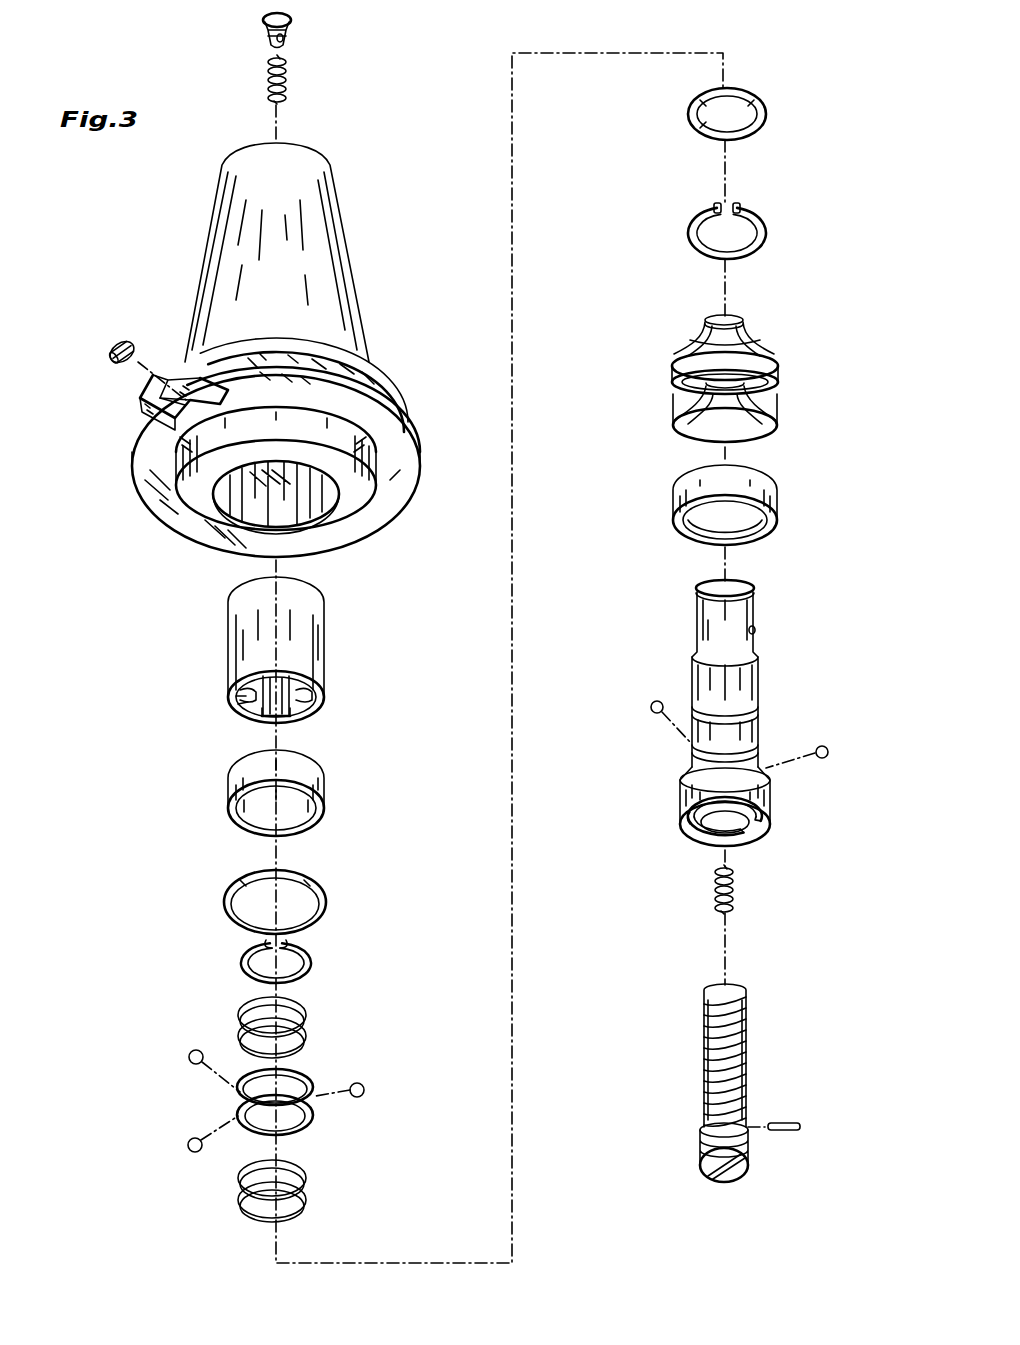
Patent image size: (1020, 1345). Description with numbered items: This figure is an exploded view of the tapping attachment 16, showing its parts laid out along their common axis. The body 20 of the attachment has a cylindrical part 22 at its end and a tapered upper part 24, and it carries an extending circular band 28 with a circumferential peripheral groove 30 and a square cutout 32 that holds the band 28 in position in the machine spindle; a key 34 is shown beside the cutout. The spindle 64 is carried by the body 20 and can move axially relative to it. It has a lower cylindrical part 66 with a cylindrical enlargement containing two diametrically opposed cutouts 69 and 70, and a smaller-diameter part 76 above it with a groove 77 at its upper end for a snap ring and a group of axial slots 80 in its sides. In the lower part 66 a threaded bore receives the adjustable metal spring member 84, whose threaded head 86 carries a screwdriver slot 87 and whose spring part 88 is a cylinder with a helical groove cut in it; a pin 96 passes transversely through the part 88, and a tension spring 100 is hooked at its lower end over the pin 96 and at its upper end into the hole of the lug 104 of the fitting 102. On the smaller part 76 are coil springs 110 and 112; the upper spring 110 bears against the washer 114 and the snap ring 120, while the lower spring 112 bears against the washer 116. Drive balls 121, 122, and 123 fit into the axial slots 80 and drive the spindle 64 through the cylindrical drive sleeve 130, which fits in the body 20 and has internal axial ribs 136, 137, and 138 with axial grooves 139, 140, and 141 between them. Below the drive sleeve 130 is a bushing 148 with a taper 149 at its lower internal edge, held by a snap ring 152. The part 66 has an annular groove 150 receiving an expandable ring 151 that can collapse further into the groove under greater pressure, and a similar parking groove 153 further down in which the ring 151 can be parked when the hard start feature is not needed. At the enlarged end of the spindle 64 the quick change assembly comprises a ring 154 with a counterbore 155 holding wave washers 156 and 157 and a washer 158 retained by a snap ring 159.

The tool holder assembly 16 is at (407, 178).
The body 20 is at (358, 272).
The cylindrical part 22 is at (185, 522).
The tapered upper part 24 is at (207, 265).
The circular part or band 28 is at (412, 458).
The circumferential peripheral groove 30 is at (135, 412).
The square cutout 32 is at (168, 432).
The key screw 34 is at (150, 318).
The spindle 64 is at (780, 620).
The cylindrical part 66 is at (750, 690).
The cutout 69 is at (690, 800).
The cutout 70 is at (748, 840).
The smaller-diameter part 76 is at (742, 586).
The groove 77 is at (700, 590).
The axial slots 80 is at (750, 628).
The adjustable metal spring member 84 is at (748, 1052).
The threaded head 86 is at (700, 1150).
The screw driver slot 87 is at (722, 1176).
The spring part 88 is at (708, 1052).
The pin 96 is at (780, 1120).
The tension spring 100 is at (288, 90).
The fitting 102 is at (292, 22).
The lug 104 is at (285, 40).
The coil spring 110 is at (306, 1020).
The coil spring 112 is at (240, 1186).
The washer 114 is at (312, 1078).
The washer 116 is at (312, 1120).
The snap ring 120 is at (308, 966).
The drive ball 121 is at (188, 1056).
The drive ball 122 is at (188, 1146).
The drive ball 123 is at (364, 1090).
The cylindrical drive sleeve 130 is at (340, 640).
The axial rib 136 is at (236, 692).
The axial rib 137 is at (258, 712).
The axial rib 138 is at (312, 690).
The axial groove 139 is at (276, 676).
The axial groove 140 is at (240, 700).
The axial groove 141 is at (306, 704).
The bushing 148 is at (328, 786).
The taper 149 is at (296, 830).
The annular groove 150 is at (758, 712).
The expandable ring 151 is at (766, 118).
The snap ring 152 is at (322, 906).
The parking groove 153 is at (764, 768).
The ring 154 is at (778, 506).
The counter bore 155 is at (762, 532).
The wave washer 156 is at (770, 346).
The wave washer 157 is at (776, 426).
The washer 158 is at (778, 392).
The snap ring 159 is at (768, 238).